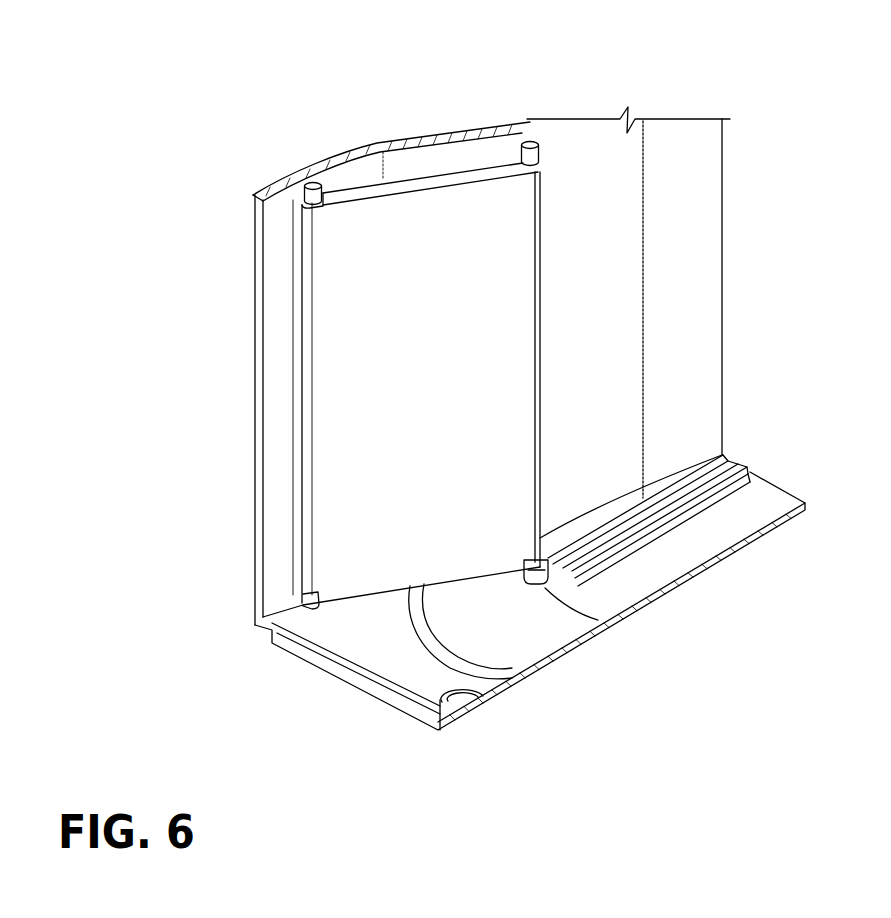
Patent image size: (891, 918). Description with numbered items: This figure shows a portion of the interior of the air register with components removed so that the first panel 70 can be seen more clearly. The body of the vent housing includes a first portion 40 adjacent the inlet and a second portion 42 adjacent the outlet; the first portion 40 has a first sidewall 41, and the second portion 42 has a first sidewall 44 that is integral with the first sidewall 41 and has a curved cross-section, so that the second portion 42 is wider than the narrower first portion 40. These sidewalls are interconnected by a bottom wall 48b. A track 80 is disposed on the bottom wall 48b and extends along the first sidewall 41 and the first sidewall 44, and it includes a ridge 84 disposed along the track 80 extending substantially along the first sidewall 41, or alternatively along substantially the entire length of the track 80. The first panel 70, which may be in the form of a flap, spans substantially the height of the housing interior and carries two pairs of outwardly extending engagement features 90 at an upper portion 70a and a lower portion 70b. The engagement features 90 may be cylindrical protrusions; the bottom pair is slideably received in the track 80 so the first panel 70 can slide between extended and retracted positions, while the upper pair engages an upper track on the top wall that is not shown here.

The first portion 40 is at (728, 565).
The first sidewall 41 is at (577, 153).
The second portion 42 is at (508, 697).
The first sidewall 44 is at (350, 177).
The bottom wall 48b is at (647, 575).
The first panel 70 is at (451, 400).
The upper portion 70a is at (433, 180).
The lower portion 70b is at (379, 590).
The track 80 is at (734, 452).
The ridge 84 is at (723, 493).
The outwardly extending engagement feature 90 is at (312, 177).